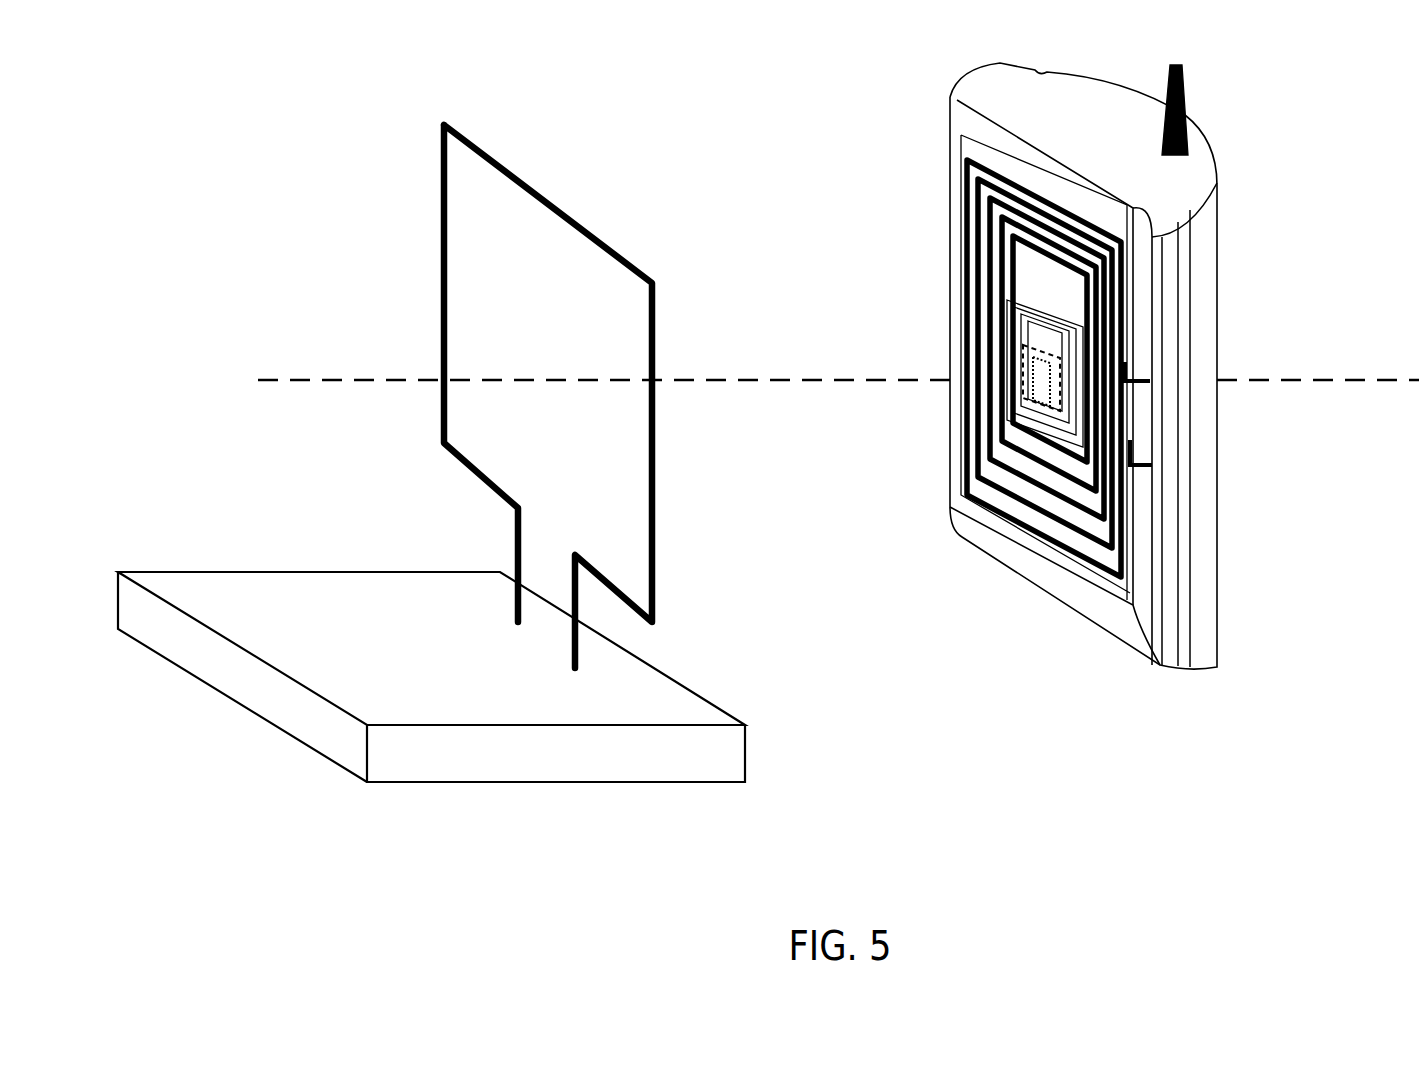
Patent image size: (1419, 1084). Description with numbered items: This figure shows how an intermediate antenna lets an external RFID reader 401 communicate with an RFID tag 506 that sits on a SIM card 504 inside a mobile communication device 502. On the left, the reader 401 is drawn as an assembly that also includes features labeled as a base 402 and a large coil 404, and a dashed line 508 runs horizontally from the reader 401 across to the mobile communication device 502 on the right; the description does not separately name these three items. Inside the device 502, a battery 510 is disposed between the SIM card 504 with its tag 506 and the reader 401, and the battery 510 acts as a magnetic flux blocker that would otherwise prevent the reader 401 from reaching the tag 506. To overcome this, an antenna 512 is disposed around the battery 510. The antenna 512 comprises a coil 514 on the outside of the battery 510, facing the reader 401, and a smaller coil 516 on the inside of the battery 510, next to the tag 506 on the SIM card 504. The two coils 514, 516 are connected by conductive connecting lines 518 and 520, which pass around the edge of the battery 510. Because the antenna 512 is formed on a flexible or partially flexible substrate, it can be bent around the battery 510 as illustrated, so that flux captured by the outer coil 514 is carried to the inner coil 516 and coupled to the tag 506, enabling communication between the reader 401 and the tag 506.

The RFID reader 401 is at (262, 440).
The base / transmitter housing 402 is at (712, 702).
The transmit coil 404 is at (655, 602).
The mobile communication device 502 is at (1200, 160).
The SIM card 504 is at (1047, 397).
The RFID tag 506 is at (1000, 442).
The central axis 508 is at (388, 380).
The battery 510 is at (1140, 548).
The antenna 512 is at (1037, 503).
The coil 514 is at (987, 192).
The coil 516 is at (1007, 300).
The conductive connecting line 518 is at (1140, 378).
The conductive connecting line 520 is at (1142, 455).